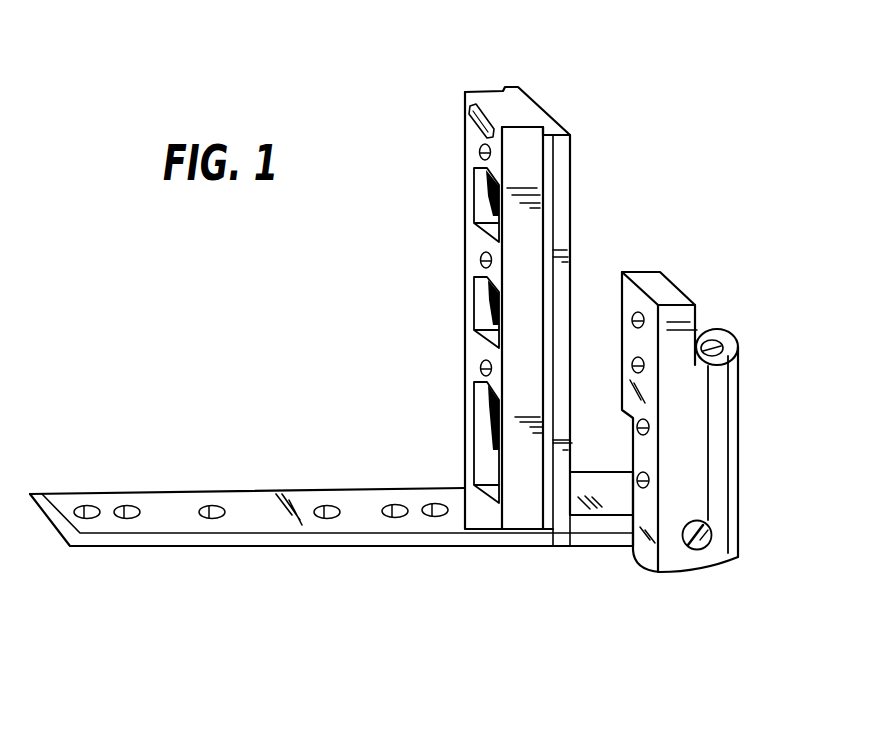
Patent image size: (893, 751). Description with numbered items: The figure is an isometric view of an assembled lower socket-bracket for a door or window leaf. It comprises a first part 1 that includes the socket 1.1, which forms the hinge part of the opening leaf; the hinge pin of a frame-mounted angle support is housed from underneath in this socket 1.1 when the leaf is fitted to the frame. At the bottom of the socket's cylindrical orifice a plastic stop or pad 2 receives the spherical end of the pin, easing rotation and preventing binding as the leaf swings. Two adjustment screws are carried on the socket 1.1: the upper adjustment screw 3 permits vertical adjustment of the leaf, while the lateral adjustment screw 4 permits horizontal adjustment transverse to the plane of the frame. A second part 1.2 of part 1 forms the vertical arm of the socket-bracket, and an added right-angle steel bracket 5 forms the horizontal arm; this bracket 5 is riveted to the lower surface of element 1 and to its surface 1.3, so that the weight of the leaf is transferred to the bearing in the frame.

The first part 1 is at (667, 246).
The socket 1.1 is at (738, 488).
The second part 1.2 is at (533, 108).
The surface 1.3 is at (652, 387).
The plastic material stop or pad 2 is at (697, 419).
The upper adjustment screw 3 is at (704, 333).
The lateral adjustment screw 4 is at (707, 549).
The added part / steel bracket 5 is at (310, 545).